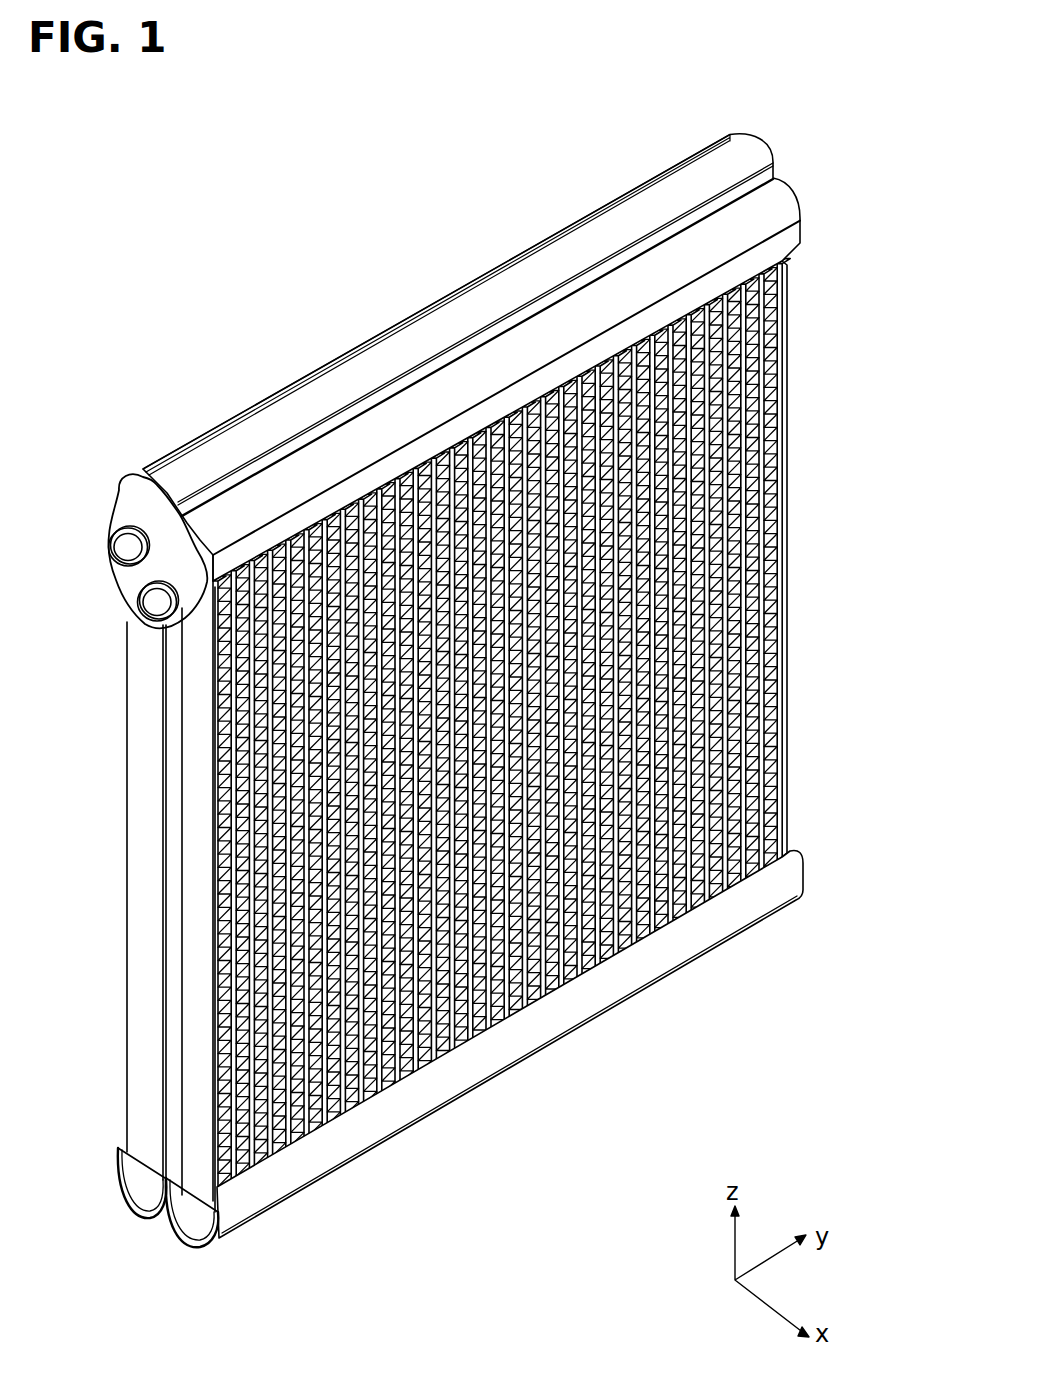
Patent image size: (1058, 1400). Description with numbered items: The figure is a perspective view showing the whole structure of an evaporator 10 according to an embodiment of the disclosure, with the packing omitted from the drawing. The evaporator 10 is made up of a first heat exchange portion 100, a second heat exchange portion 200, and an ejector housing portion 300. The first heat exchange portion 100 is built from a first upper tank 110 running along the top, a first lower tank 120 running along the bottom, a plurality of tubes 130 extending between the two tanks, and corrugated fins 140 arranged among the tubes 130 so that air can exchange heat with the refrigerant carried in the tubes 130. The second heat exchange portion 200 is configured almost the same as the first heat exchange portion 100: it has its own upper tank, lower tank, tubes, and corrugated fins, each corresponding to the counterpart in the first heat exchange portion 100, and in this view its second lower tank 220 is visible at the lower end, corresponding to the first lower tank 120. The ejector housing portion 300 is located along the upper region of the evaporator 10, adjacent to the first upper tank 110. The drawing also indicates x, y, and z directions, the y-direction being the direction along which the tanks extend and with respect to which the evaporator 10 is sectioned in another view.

The evaporator 10 is at (483, 739).
The first heat exchange portion 100 is at (190, 1252).
The first upper tank 110 is at (497, 377).
The first lower tank 120 is at (767, 892).
The tubes 130 is at (777, 601).
The corrugated fins 140 is at (777, 293).
The second heat exchange portion 200 is at (105, 987).
The second lower tank 220 is at (122, 1172).
The ejector housing portion 300 is at (556, 258).